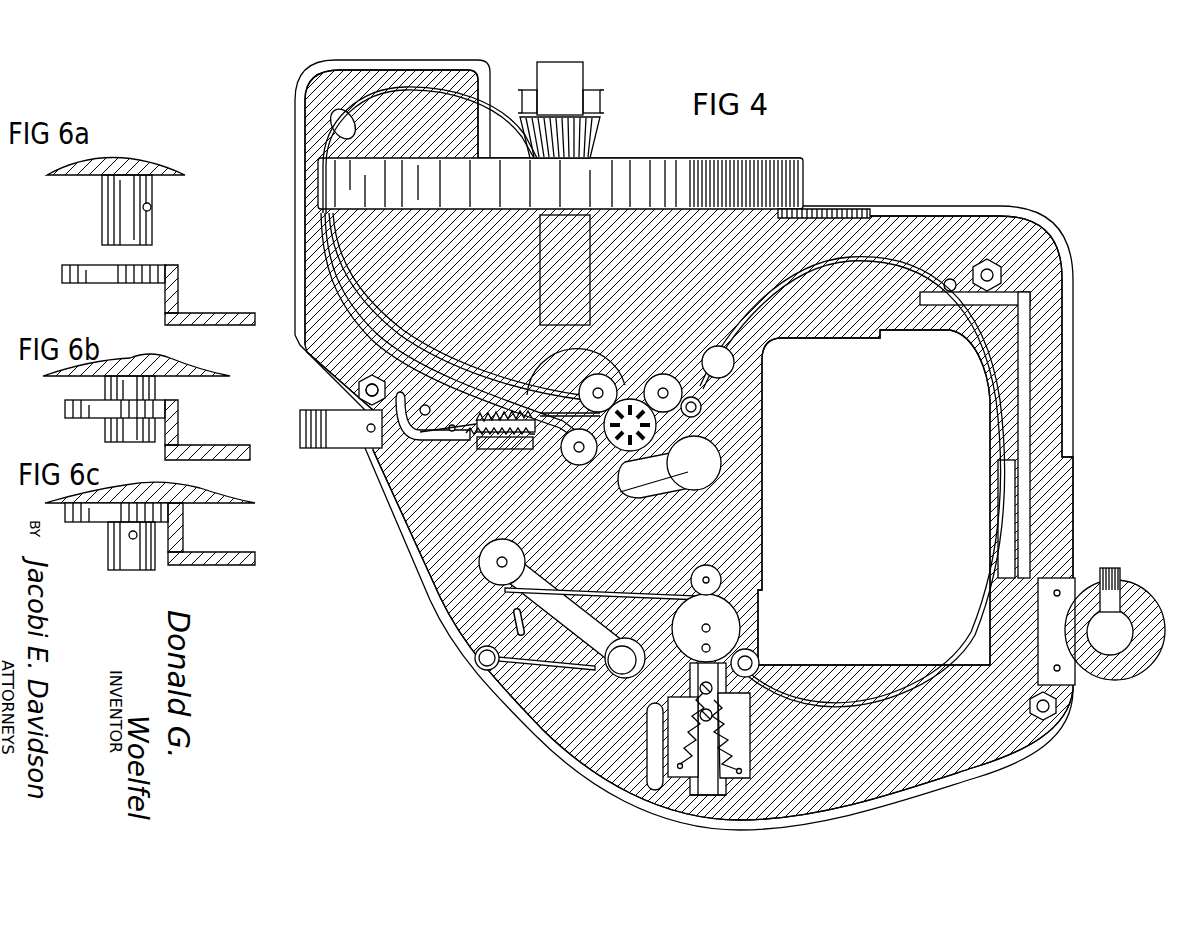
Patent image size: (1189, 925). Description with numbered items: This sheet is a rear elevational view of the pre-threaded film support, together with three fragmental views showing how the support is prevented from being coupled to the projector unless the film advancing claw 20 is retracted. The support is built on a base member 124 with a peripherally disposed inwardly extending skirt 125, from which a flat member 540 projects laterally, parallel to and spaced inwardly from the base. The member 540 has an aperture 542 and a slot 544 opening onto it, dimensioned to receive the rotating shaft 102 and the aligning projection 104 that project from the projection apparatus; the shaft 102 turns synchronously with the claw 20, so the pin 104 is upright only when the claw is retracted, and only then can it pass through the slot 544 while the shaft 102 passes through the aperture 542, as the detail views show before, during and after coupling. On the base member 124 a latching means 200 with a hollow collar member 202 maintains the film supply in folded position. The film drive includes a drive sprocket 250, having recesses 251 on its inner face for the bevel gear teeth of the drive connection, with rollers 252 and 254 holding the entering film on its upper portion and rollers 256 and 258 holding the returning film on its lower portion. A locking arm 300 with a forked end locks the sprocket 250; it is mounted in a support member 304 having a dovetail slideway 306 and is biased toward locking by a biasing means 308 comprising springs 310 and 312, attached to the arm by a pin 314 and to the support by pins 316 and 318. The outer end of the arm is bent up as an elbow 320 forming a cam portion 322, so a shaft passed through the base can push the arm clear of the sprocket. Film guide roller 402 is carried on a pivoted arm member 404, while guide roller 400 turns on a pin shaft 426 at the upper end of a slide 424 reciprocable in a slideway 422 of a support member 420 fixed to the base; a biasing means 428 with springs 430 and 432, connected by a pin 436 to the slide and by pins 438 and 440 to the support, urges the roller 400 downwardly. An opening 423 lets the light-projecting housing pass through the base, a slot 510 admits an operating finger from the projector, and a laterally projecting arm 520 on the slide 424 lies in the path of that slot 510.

In FIG. 6A, the film advancing claw 20 is at (162, 175).
In FIG. 6B, the film advancing claw 20 is at (136, 365).
In FIG. 6C, the film advancing claw 20 is at (232, 503).
In FIG. 6A, the rotating shaft 102 is at (150, 241).
In FIG. 6B, the rotating shaft 102 is at (148, 442).
In FIG. 6C, the rotating shaft 102 is at (153, 570).
In FIG. 6A, the aligning projection 104 is at (151, 207).
In FIG. 6B, the aligning projection 104 is at (130, 410).
In FIG. 6C, the aligning projection 104 is at (131, 538).
In FIG. 4, the base member 124 is at (1060, 292).
In FIG. 6A, the base member 124 is at (234, 313).
In FIG. 6B, the base member 124 is at (207, 452).
In FIG. 6C, the base member 124 is at (233, 566).
In FIG. 6A, the skirt 125 is at (179, 297).
In FIG. 6B, the skirt 125 is at (171, 422).
In FIG. 6C, the skirt 125 is at (184, 531).
In FIG. 6A, the flat member 540 is at (74, 296).
In FIG. 6B, the flat member 540 is at (75, 428).
In FIG. 6C, the flat member 540 is at (83, 536).
In FIG. 6A, the aperture 542 is at (104, 286).
In FIG. 6A, the slot 544 is at (133, 284).
In FIG. 6B, the slot 544 is at (143, 405).
In FIG. 4, the latching means 200 is at (505, 679).
In FIG. 4, the collar member 202 is at (569, 679).
In FIG. 4, the drive sprocket 250 is at (663, 380).
In FIG. 4, the recesses 251 is at (580, 466).
In FIG. 4, the roller 252 is at (610, 381).
In FIG. 4, the roller 254 is at (703, 394).
In FIG. 4, the roller 256 is at (565, 460).
In FIG. 4, the roller 258 is at (665, 480).
In FIG. 4, the locking arm 300 is at (442, 434).
In FIG. 4, the support member 304 is at (497, 450).
In FIG. 4, the slideway 306 is at (612, 413).
In FIG. 4, the biasing means 308 is at (496, 400).
In FIG. 4, the spring 310 is at (482, 420).
In FIG. 4, the spring 312 is at (470, 438).
In FIG. 4, the pin 314 is at (452, 425).
In FIG. 4, the pin 316 is at (523, 442).
In FIG. 4, the pin 318 is at (537, 378).
In FIG. 4, the elbow 320 is at (408, 432).
In FIG. 4, the cam portion 322 is at (397, 390).
In FIG. 4, the guide roller 400 is at (727, 618).
In FIG. 4, the guide roller 402 is at (490, 547).
In FIG. 4, the arm member 404 is at (543, 578).
In FIG. 4, the support member 420 is at (750, 737).
In FIG. 4, the slideway 422 is at (723, 775).
In FIG. 4, the opening 423 is at (708, 466).
In FIG. 4, the slide 424 is at (660, 770).
In FIG. 4, the pin shaft 426 is at (703, 625).
In FIG. 4, the biasing means 428 is at (749, 727).
In FIG. 4, the spring 430 is at (697, 700).
In FIG. 4, the spring 432 is at (780, 688).
In FIG. 4, the pin 436 is at (760, 662).
In FIG. 4, the pin 438 is at (657, 750).
In FIG. 4, the pin 440 is at (750, 753).
In FIG. 4, the slot 510 is at (650, 713).
In FIG. 4, the arm 520 is at (653, 703).